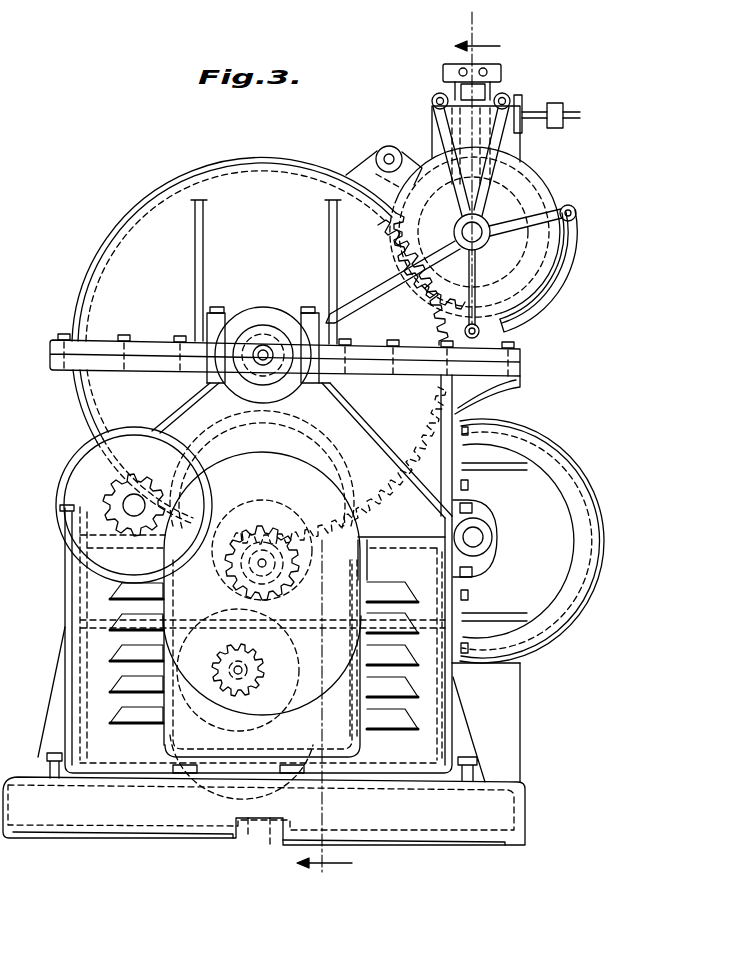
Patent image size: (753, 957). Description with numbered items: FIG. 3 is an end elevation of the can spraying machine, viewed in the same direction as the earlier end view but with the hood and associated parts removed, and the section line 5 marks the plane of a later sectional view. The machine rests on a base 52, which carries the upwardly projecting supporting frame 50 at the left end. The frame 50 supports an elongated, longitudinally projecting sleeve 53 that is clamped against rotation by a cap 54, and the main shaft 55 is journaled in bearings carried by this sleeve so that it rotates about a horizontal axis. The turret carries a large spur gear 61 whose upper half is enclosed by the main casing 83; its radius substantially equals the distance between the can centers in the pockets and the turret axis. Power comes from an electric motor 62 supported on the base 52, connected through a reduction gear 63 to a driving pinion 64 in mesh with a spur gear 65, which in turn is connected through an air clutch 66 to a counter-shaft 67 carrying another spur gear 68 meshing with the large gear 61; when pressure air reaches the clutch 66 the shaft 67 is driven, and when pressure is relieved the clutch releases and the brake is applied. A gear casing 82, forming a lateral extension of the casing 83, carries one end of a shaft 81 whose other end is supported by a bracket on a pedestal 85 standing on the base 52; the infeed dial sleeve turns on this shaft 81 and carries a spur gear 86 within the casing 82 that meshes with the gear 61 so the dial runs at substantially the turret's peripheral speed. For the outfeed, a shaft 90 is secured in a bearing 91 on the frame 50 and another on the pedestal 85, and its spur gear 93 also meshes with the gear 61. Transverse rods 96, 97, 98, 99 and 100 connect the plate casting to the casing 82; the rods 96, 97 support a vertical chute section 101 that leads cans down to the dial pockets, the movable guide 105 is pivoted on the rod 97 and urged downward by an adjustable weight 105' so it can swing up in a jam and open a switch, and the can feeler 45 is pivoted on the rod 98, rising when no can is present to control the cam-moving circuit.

The section line 5- 5 is at (398, 455).
The can feeler 45 is at (523, 315).
The supporting frame 50 is at (187, 397).
The base 52 is at (522, 797).
The sleeve 53 is at (237, 312).
The cap 54 is at (283, 320).
The main shaft 55 is at (261, 306).
The large spur gear 61 is at (421, 426).
The electric motor 62 is at (163, 740).
The reduction gear 63 is at (368, 745).
The driving pinion 64 is at (254, 681).
The spur gear 65 is at (238, 652).
The air clutch 66 is at (242, 505).
The counter-shaft 67 is at (283, 512).
The spur gear 68 is at (372, 553).
The shaft 81 is at (545, 297).
The gear casing 82 is at (505, 137).
The main casing 83 is at (142, 256).
The pedestal 85 is at (507, 708).
The spur gear 86 is at (377, 160).
The shaft 90 is at (475, 539).
The bearing 91 is at (484, 528).
The spur gear 93 is at (283, 665).
The transverse rod 96 is at (431, 98).
The transverse rod 97 is at (510, 97).
The transverse rod 98 is at (578, 208).
The transverse rod 99 is at (480, 336).
The transverse rod 100 is at (388, 146).
The chute section 101 is at (438, 68).
The movable guide 105 is at (505, 232).
The adjustable weight 105' is at (577, 97).